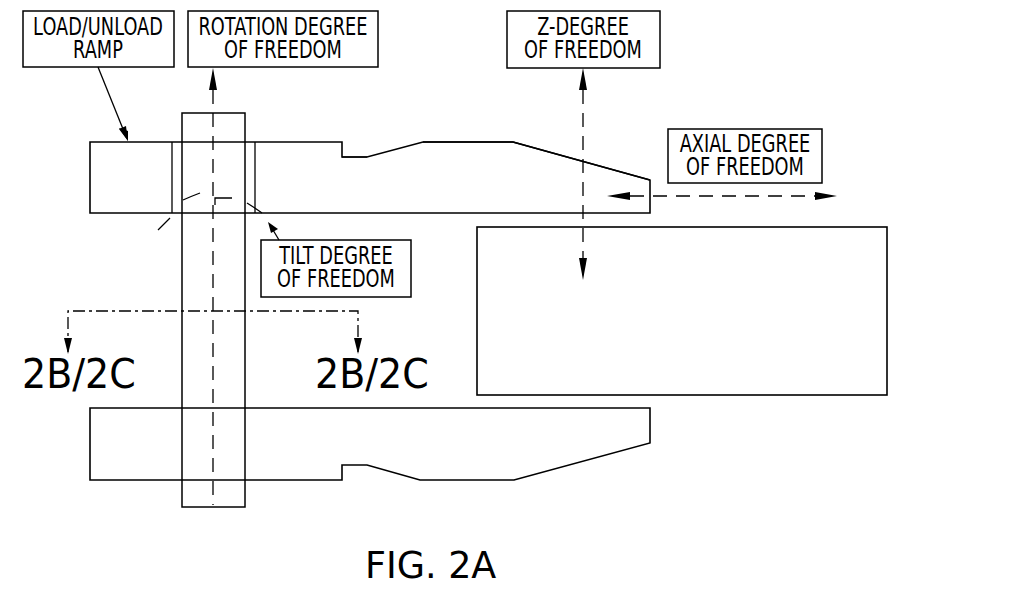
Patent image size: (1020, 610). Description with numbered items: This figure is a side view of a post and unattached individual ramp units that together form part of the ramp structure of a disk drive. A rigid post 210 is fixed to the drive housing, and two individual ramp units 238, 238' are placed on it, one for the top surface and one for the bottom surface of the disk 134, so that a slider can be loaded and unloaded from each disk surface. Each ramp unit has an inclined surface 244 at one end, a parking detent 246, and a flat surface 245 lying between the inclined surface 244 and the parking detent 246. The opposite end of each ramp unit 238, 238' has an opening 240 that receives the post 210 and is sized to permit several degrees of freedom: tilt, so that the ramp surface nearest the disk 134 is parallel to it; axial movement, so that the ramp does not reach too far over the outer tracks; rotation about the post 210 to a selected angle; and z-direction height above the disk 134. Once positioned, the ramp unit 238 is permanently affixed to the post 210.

The individual ramp unit 238 is at (343, 177).
The individual ramp unit 238' is at (399, 444).
The opening 240 is at (253, 155).
The inclined surface 244 is at (605, 164).
The flat surface 245 is at (470, 142).
The parking detent 246 is at (367, 156).
The post 210 is at (182, 280).
The disk 134 is at (805, 395).